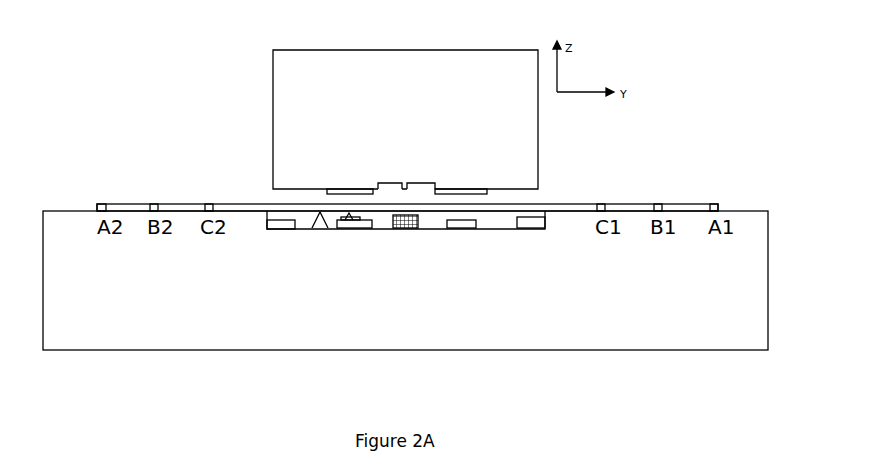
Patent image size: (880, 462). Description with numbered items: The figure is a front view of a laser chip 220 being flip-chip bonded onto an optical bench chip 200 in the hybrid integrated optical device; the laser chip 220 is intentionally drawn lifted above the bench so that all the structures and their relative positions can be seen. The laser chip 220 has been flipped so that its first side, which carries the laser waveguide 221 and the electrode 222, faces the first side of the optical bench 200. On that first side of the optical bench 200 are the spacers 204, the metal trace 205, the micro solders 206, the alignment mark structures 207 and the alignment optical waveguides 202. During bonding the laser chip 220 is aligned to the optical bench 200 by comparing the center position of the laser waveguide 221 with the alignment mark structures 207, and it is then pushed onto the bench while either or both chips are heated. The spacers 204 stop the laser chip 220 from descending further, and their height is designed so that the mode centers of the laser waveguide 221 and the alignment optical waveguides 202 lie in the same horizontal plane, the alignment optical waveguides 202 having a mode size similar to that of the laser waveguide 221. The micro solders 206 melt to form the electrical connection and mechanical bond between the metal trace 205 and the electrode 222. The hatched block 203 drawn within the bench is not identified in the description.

The optical bench chip 200 is at (88, 210).
The alignment optical waveguides 202 is at (105, 193).
The conductive block 203 is at (387, 228).
The spacers 204 is at (273, 223).
The metal trace 205 is at (315, 218).
The micro solders 206 is at (350, 214).
The alignment mark structures 207 is at (409, 215).
The laser chip 220 is at (390, 63).
The laser waveguide 221 is at (404, 190).
The electrode 222 is at (343, 191).